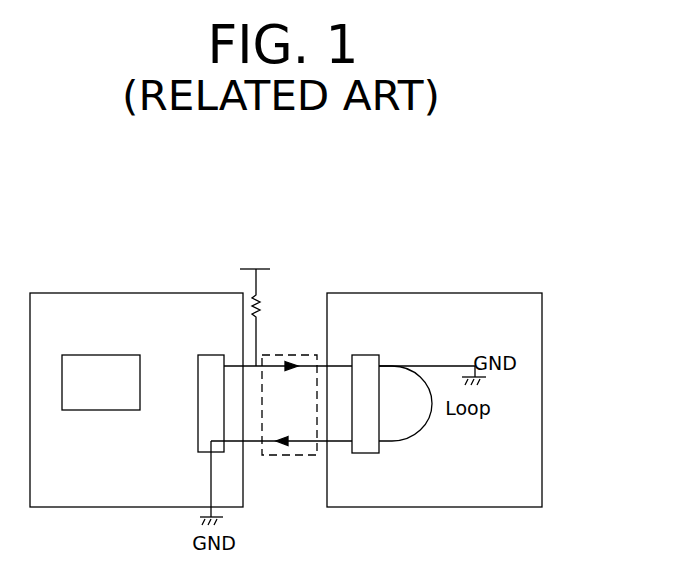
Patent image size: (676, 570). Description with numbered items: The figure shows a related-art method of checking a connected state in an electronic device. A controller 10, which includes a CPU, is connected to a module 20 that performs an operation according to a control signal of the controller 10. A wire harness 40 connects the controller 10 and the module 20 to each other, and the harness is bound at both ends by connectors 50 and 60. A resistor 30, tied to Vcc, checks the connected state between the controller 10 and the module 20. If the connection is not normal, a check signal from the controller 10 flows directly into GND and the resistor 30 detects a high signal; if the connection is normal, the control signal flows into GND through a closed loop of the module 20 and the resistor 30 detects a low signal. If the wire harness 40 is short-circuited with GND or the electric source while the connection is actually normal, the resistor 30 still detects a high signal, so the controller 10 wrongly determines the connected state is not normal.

The controller 10 is at (178, 292).
The module 20 is at (476, 292).
The resistor 30 is at (278, 302).
The wire harness 40 is at (267, 460).
The connector 50 is at (210, 354).
The connector 60 is at (364, 354).